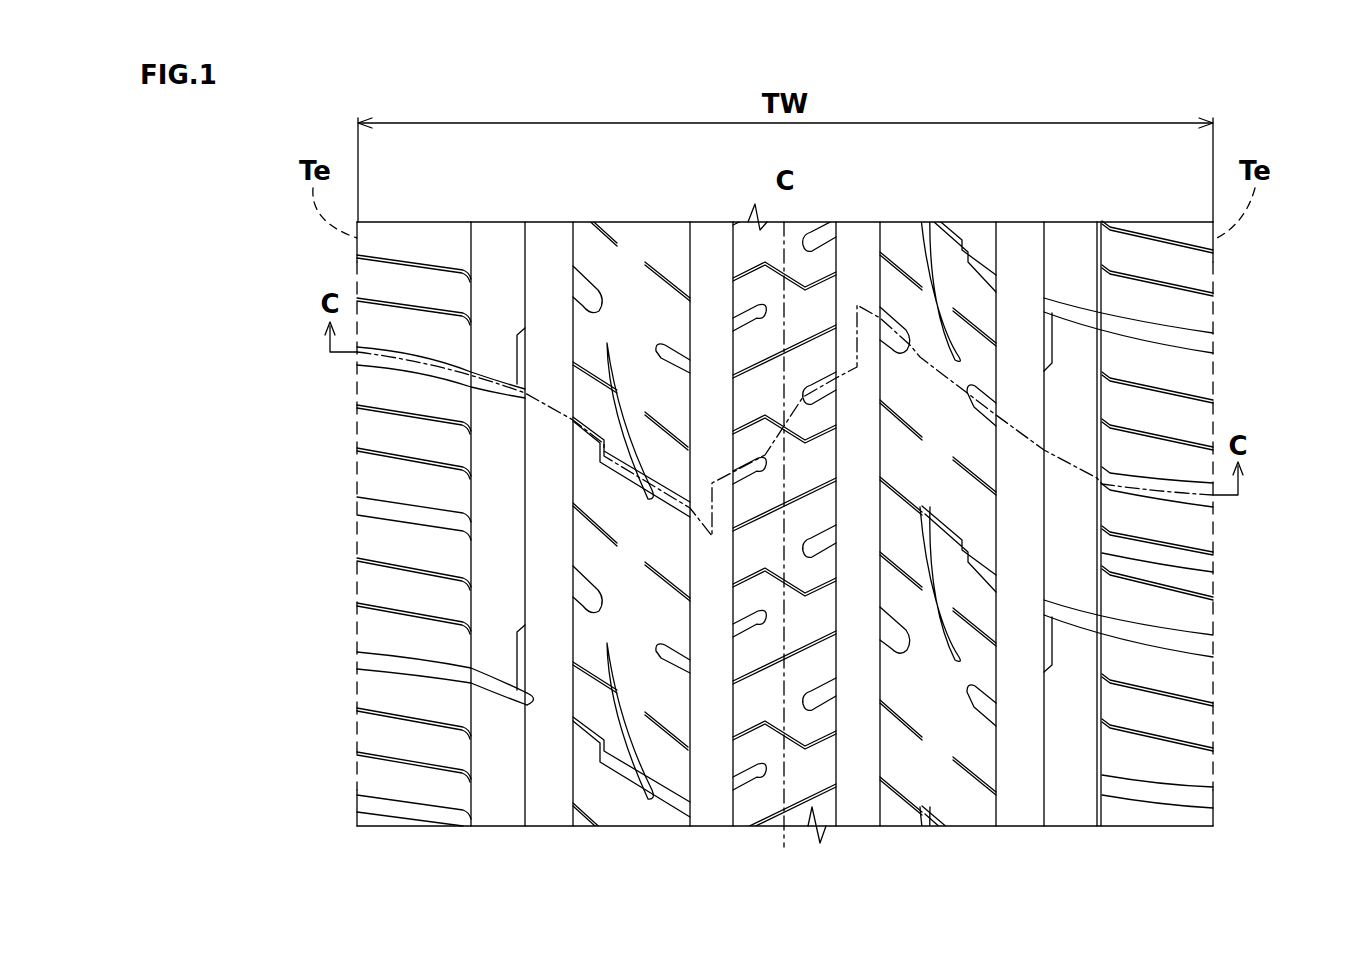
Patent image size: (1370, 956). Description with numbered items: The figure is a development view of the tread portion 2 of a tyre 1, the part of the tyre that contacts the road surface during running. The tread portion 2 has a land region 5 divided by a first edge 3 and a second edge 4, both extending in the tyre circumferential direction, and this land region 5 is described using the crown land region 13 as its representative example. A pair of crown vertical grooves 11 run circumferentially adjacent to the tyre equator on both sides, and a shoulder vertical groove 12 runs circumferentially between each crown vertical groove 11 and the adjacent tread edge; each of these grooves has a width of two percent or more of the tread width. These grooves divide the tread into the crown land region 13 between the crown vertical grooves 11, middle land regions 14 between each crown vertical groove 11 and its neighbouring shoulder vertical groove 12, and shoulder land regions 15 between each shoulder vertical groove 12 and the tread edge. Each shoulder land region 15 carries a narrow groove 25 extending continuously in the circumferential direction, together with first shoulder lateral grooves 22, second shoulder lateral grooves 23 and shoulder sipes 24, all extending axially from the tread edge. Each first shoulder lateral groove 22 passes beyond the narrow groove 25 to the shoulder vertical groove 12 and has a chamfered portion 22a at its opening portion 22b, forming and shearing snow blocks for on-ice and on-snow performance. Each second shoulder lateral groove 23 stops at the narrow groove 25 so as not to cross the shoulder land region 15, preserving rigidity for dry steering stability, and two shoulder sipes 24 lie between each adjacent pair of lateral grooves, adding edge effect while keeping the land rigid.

The tyre 1 is at (1305, 184).
The tread portion 2 is at (1088, 196).
The first edge 3 is at (733, 255).
The second edge 4 is at (836, 255).
The land region 5 is at (830, 857).
The crown vertical grooves 11 is at (700, 275).
The shoulder vertical grooves 12 is at (546, 245).
The crown land region 13 is at (763, 803).
The middle land regions 14 is at (625, 800).
The shoulder land regions 15 is at (497, 800).
The first shoulder lateral grooves 22 is at (395, 362).
The chamfered portion 22a is at (523, 662).
The opening portion 22b is at (540, 712).
The second shoulder lateral grooves 23 is at (395, 515).
The shoulder sipes 24 is at (395, 562).
The narrow groove 25 is at (463, 798).